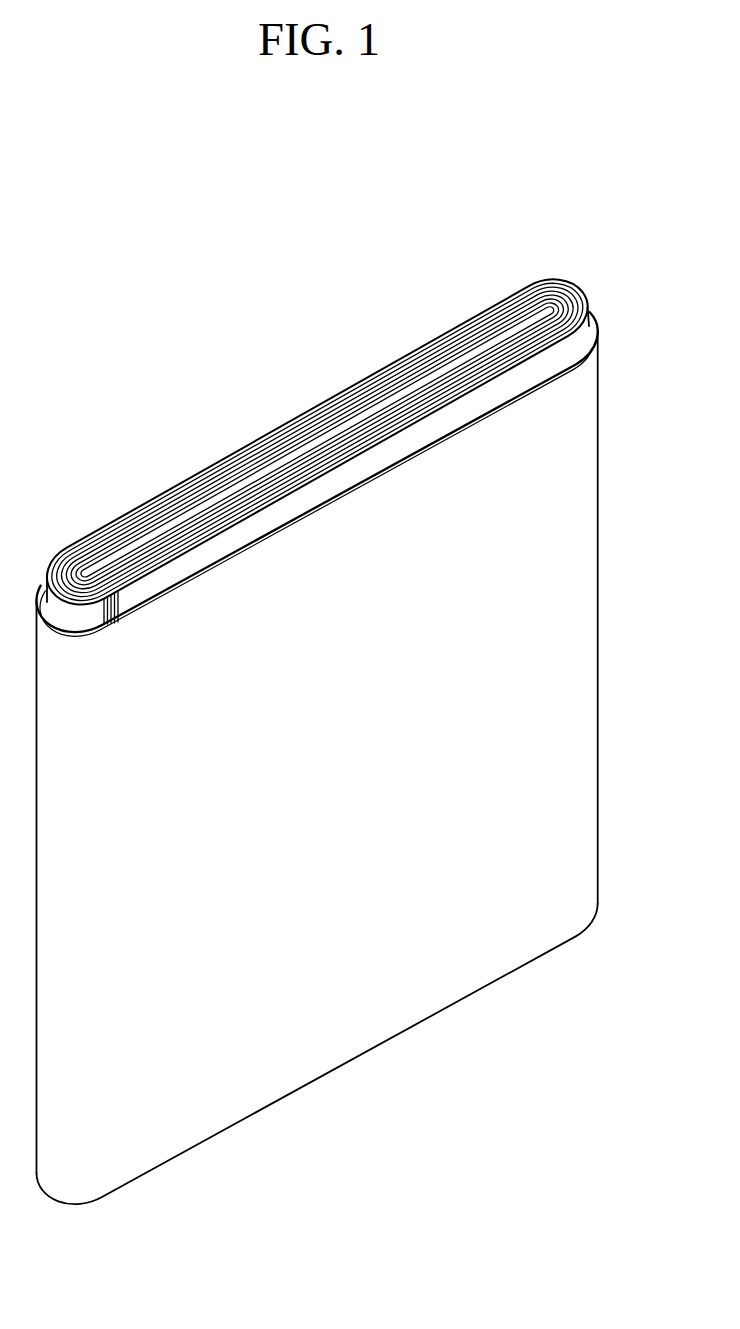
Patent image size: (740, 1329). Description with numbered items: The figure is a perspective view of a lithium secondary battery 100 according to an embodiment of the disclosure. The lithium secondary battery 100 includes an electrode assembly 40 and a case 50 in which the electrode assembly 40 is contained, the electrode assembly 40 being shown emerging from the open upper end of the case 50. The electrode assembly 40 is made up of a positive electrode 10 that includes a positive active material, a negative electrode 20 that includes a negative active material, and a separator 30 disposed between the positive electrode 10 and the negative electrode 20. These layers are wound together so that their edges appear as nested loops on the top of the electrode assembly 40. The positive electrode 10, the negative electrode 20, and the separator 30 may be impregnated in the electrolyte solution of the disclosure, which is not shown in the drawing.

The lithium secondary battery 100 is at (295, 154).
The positive electrode 10 is at (590, 303).
The negative electrode 20 is at (547, 298).
The separator 30 is at (570, 298).
The electrode assembly 40 is at (268, 396).
The case 50 is at (582, 608).